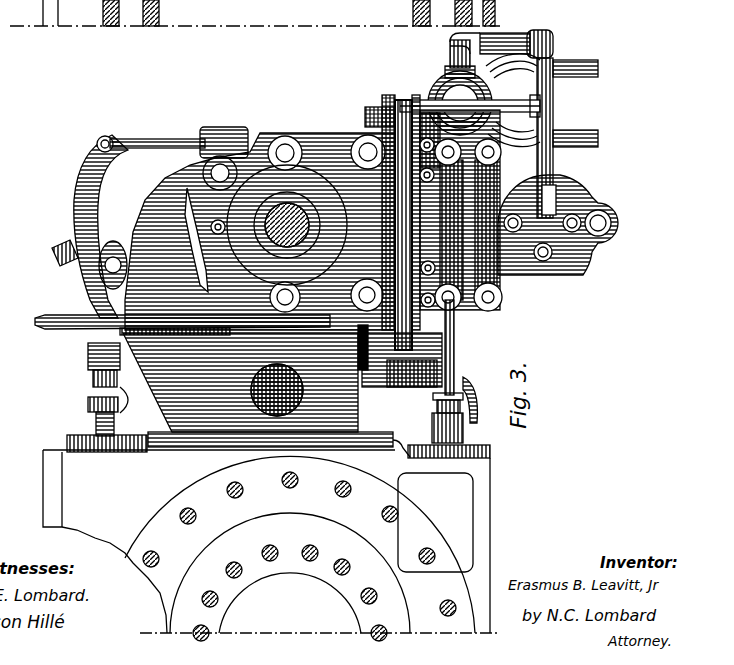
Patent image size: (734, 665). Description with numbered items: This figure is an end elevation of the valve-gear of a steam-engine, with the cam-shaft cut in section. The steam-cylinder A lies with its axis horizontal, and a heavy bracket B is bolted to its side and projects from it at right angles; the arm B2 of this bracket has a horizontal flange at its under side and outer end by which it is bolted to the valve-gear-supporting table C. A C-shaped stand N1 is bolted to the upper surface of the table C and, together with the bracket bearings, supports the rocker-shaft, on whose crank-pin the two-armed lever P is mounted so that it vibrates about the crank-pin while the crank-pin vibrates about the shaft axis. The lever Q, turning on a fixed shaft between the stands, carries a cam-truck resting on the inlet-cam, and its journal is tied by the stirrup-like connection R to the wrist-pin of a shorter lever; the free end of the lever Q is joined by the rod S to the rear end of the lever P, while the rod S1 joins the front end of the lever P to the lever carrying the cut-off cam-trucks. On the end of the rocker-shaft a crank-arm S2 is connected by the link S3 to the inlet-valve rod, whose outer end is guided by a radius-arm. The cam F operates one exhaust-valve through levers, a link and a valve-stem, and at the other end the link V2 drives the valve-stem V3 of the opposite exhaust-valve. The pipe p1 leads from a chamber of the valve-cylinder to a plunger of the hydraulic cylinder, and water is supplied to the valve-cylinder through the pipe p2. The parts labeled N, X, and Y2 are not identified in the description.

The pipe p1 is at (527, 38).
The water-supply pipe p2 is at (578, 60).
The valve casing Y2 is at (448, 96).
The two-armed lever P is at (80, 180).
The rod S1 is at (152, 138).
The arm B2 is at (78, 238).
The stand N1 is at (155, 186).
The lever Q is at (201, 240).
The stirrup-like connection R is at (223, 224).
The rod S is at (349, 223).
The cam F is at (288, 225).
The link S3 is at (88, 310).
The crank-arm S2 is at (90, 394).
The vertical slide bar N is at (392, 222).
The valve-gear-supporting table C is at (458, 210).
The link V2 is at (500, 292).
The valve-stem V3 is at (454, 350).
The cover plate X is at (578, 258).
The bracket B is at (282, 391).
The steam-cylinder A is at (271, 538).